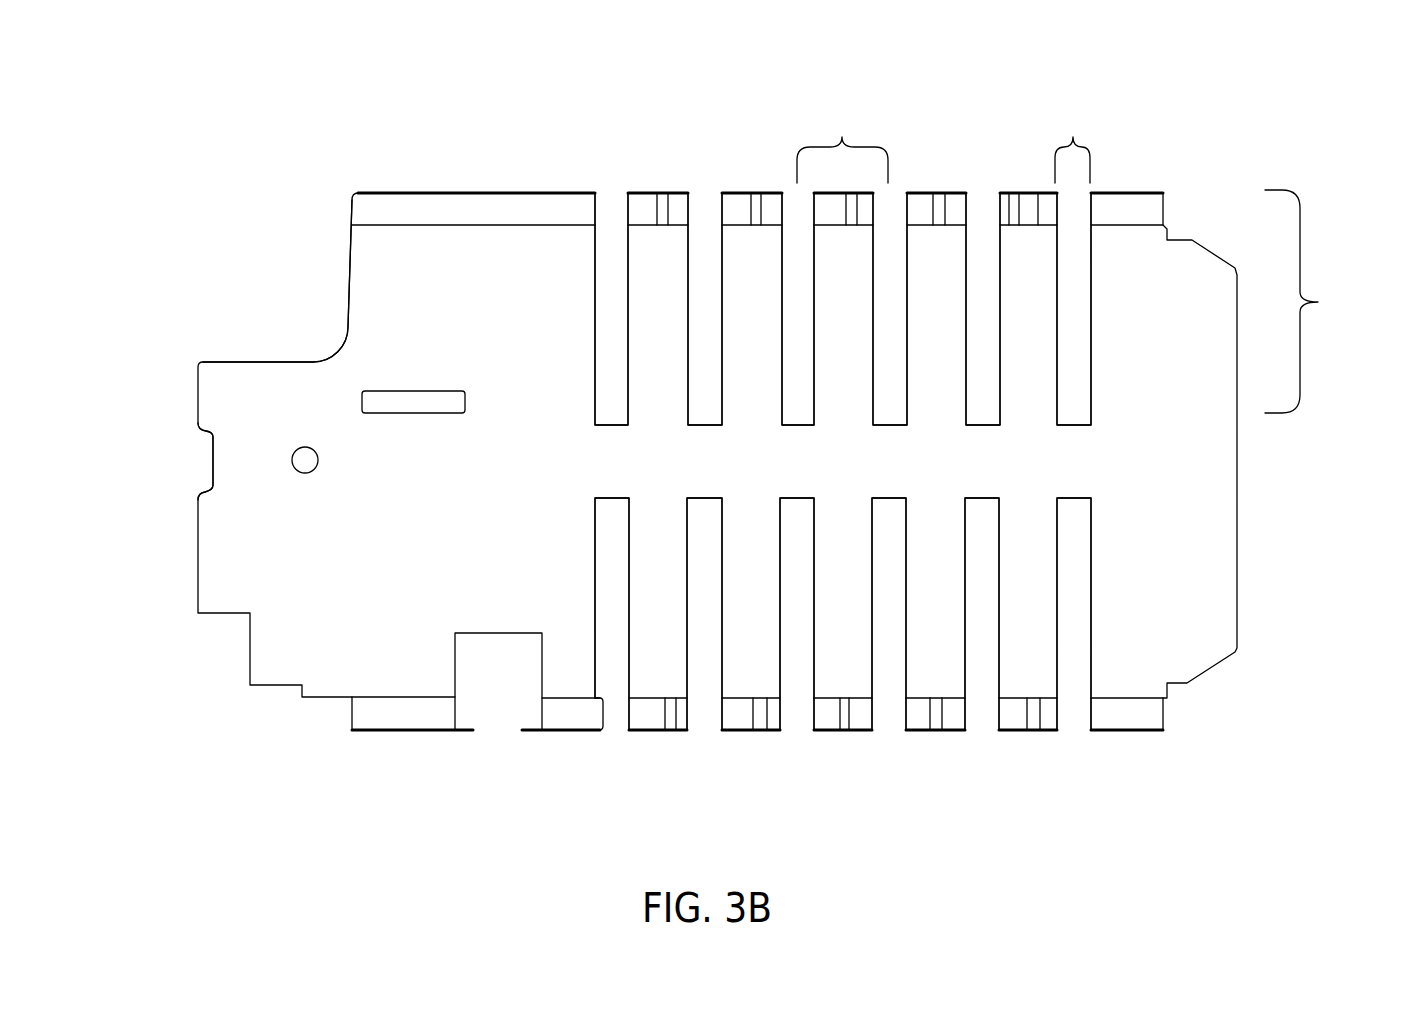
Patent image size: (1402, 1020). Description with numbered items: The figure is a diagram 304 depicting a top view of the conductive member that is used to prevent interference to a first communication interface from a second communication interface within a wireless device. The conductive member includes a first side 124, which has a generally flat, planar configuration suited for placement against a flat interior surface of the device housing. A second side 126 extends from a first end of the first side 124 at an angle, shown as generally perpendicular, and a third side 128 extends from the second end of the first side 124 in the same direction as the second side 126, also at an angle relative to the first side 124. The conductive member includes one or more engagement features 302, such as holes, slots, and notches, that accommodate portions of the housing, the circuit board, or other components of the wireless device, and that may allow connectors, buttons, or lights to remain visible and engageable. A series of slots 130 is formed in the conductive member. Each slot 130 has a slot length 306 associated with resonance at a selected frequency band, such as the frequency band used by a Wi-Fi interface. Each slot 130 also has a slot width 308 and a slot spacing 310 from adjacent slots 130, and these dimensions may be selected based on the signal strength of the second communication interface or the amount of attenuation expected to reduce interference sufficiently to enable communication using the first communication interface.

The first side 124 is at (400, 308).
The second side 126 is at (585, 727).
The third side 128 is at (450, 193).
The slot 130 is at (1075, 712).
The engagement features 302 is at (205, 470).
The diagram 304 is at (732, 475).
The slot length 306 is at (1326, 301).
The slot width 308 is at (1073, 118).
The slot spacing 310 is at (842, 118).